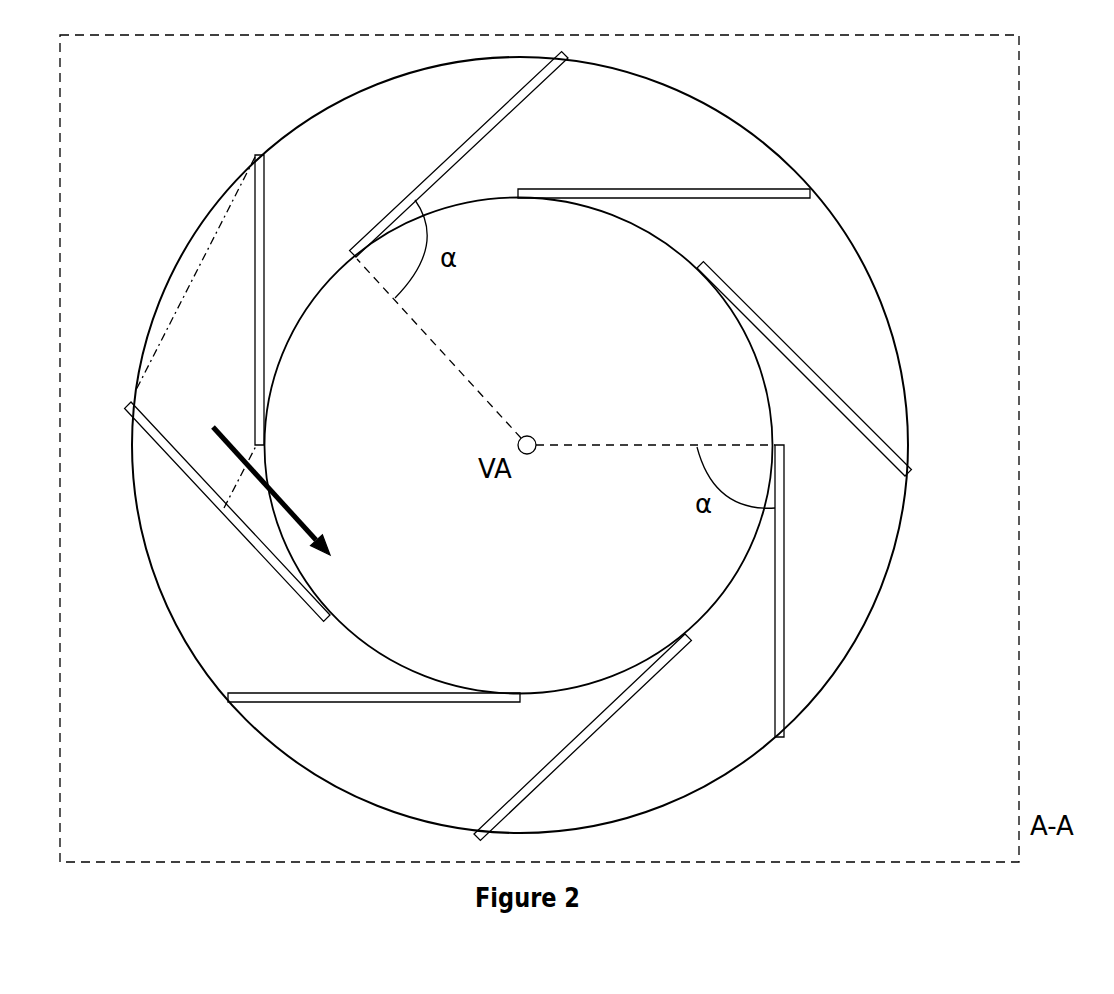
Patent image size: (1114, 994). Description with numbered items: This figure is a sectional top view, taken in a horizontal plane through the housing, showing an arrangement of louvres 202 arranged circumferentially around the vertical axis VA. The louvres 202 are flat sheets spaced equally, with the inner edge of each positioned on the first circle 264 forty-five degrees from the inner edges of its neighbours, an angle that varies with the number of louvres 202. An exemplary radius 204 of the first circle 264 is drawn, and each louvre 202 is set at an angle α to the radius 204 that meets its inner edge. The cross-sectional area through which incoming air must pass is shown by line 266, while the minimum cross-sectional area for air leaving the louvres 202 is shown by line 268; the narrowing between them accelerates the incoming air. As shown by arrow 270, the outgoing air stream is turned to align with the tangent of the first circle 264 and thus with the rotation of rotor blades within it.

The louvres 202 is at (785, 560).
The radius 204 is at (655, 428).
The first circle 264 is at (673, 247).
The line 266 is at (192, 283).
The line 268 is at (235, 500).
The arrow 270 is at (282, 491).